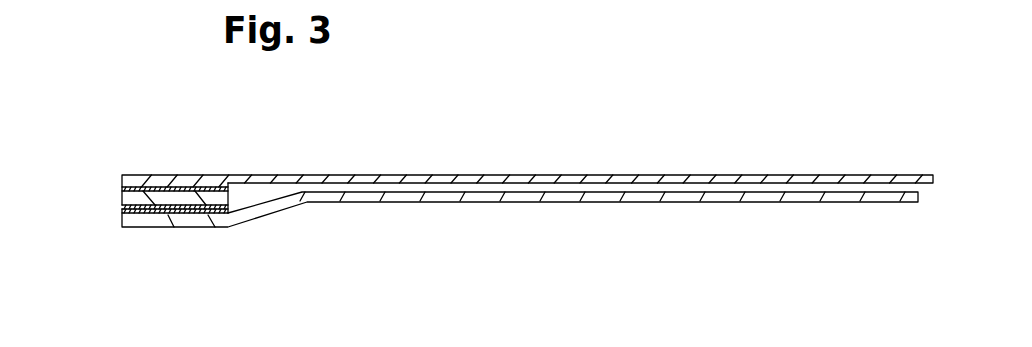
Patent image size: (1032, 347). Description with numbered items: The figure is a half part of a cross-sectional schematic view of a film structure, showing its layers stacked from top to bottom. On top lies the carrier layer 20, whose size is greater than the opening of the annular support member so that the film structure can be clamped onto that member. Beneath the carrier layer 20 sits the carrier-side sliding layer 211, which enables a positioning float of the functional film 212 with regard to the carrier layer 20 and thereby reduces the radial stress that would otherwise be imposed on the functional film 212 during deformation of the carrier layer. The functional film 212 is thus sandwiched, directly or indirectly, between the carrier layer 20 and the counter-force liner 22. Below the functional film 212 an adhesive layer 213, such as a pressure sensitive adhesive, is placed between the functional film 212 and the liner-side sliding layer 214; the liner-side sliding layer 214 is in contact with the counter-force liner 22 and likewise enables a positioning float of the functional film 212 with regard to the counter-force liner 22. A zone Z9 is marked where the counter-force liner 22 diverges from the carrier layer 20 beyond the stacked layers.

The carrier layer 20 is at (177, 176).
The carrier-side sliding layer 211 is at (135, 188).
The functional film 212 is at (122, 188).
The adhesive layer 213 is at (122, 206).
The liner-side sliding layer 214 is at (122, 212).
The counter-force liner 22 is at (143, 228).
The zone Z9 is at (236, 206).